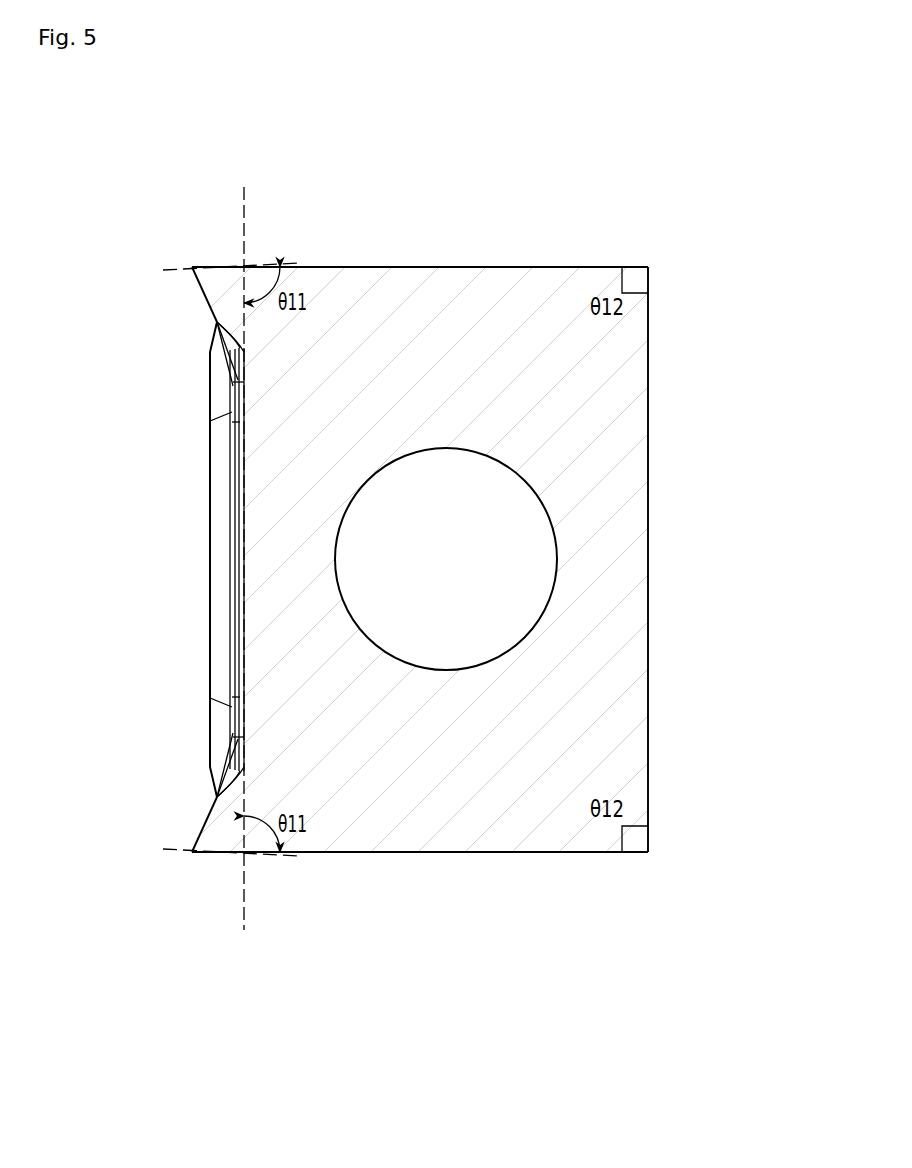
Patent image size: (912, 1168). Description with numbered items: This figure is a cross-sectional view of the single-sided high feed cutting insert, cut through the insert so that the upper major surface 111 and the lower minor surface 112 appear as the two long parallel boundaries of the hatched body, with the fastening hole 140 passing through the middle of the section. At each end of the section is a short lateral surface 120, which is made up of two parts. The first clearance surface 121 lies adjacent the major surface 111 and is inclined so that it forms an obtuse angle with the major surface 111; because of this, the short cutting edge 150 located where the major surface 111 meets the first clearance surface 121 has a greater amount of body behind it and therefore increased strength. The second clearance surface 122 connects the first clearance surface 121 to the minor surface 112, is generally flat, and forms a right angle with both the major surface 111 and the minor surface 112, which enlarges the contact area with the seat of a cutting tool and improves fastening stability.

The major surface 111 is at (243, 577).
The minor surface 112 is at (652, 651).
The short lateral surface 120 is at (538, 266).
The first clearance surface 121 is at (213, 267).
The second clearance surface 122 is at (388, 267).
The fastening hole 140 is at (475, 534).
The short cutting edge 150 is at (192, 267).